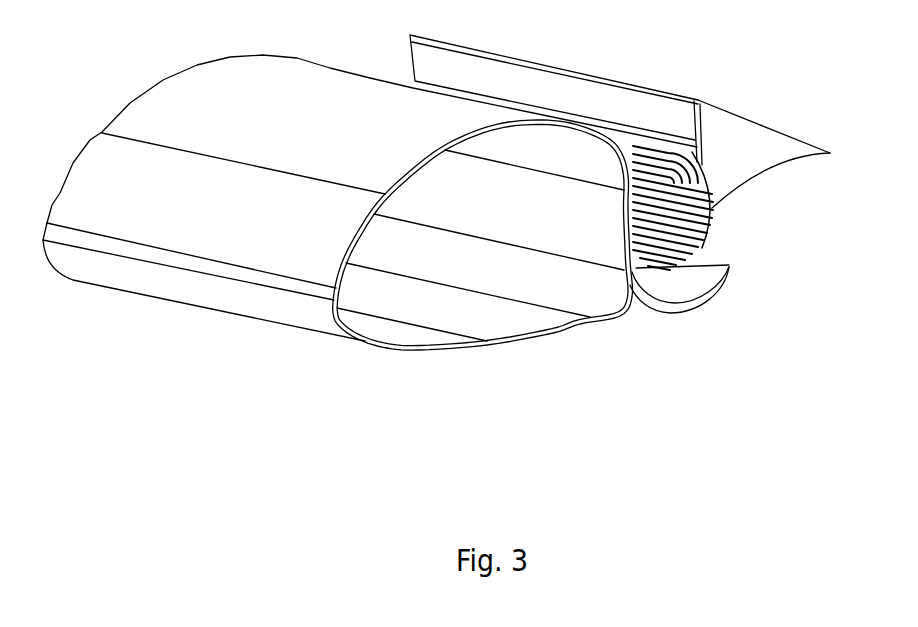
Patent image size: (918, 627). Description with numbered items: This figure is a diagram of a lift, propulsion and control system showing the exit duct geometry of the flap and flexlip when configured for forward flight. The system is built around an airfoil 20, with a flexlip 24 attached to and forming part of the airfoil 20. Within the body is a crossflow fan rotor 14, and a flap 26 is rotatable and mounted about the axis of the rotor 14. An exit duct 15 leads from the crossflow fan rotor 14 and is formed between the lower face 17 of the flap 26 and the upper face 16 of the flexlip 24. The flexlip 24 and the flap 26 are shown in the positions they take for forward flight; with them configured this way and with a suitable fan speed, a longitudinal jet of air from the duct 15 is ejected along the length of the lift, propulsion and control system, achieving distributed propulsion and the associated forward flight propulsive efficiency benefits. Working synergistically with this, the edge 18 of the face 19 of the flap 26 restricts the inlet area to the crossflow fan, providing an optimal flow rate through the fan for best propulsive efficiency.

The airfoil 20 is at (308, 119).
The face of the flap 19 is at (620, 112).
The edge of face of the flap 18 is at (690, 150).
The flap 26 is at (733, 157).
The lower face of flap 17 is at (777, 167).
The crossflow fan rotor 14 is at (625, 255).
The exit duct 15 is at (713, 240).
The upper face of flexlip 16 is at (695, 281).
The flexlip 24 is at (686, 303).